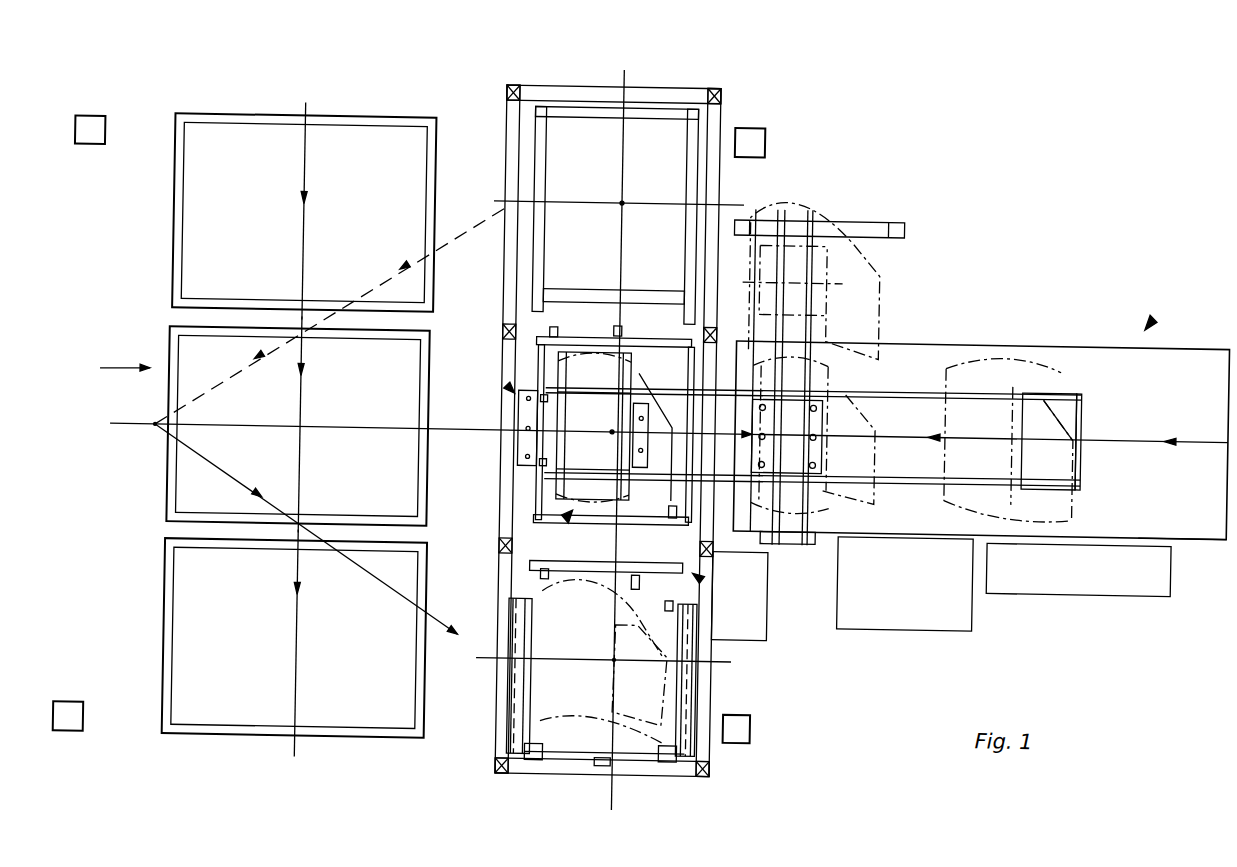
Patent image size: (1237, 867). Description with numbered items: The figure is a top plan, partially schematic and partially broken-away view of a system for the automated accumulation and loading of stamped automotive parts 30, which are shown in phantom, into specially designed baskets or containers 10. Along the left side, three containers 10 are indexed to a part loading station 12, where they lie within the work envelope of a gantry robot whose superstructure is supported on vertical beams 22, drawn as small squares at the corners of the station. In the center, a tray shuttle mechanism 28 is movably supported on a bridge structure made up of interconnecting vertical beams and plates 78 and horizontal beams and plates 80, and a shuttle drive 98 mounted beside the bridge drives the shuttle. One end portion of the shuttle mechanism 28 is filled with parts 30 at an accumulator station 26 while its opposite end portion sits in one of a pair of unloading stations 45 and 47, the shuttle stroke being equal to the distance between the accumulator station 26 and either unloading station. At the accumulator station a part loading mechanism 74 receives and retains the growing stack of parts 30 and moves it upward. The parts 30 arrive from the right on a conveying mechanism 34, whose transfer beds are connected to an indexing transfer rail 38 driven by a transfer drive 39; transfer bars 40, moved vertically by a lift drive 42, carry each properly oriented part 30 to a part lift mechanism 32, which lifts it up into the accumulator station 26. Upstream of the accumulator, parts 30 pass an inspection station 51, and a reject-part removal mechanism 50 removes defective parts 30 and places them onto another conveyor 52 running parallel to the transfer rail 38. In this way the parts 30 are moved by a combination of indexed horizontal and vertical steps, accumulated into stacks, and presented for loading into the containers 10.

The container 10 is at (374, 116).
The part loading station 12 is at (109, 365).
The vertical beams 22 is at (97, 121).
The accumulator station 26 is at (610, 432).
The tray shuttle mechanism 28 is at (701, 578).
The automotive parts 30 is at (637, 373).
The part lift mechanism 32 is at (568, 517).
The conveying mechanism 34 is at (1150, 311).
The transfer rail 38 is at (1202, 530).
The transfer drive 39 is at (953, 624).
The transfer bars 40 is at (1056, 472).
The lift drive 42 is at (1148, 586).
The unloading station 45 is at (556, 689).
The unloading station 47 is at (614, 203).
The reject-part removal mechanism 50 is at (823, 451).
The inspection station 51 is at (1007, 423).
The conveyor 52 is at (889, 217).
The part loading mechanism 74 is at (508, 389).
The vertical beams and plates 78 is at (501, 95).
The horizontal beams and plates 80 is at (571, 91).
The shuttle drive 98 is at (771, 634).